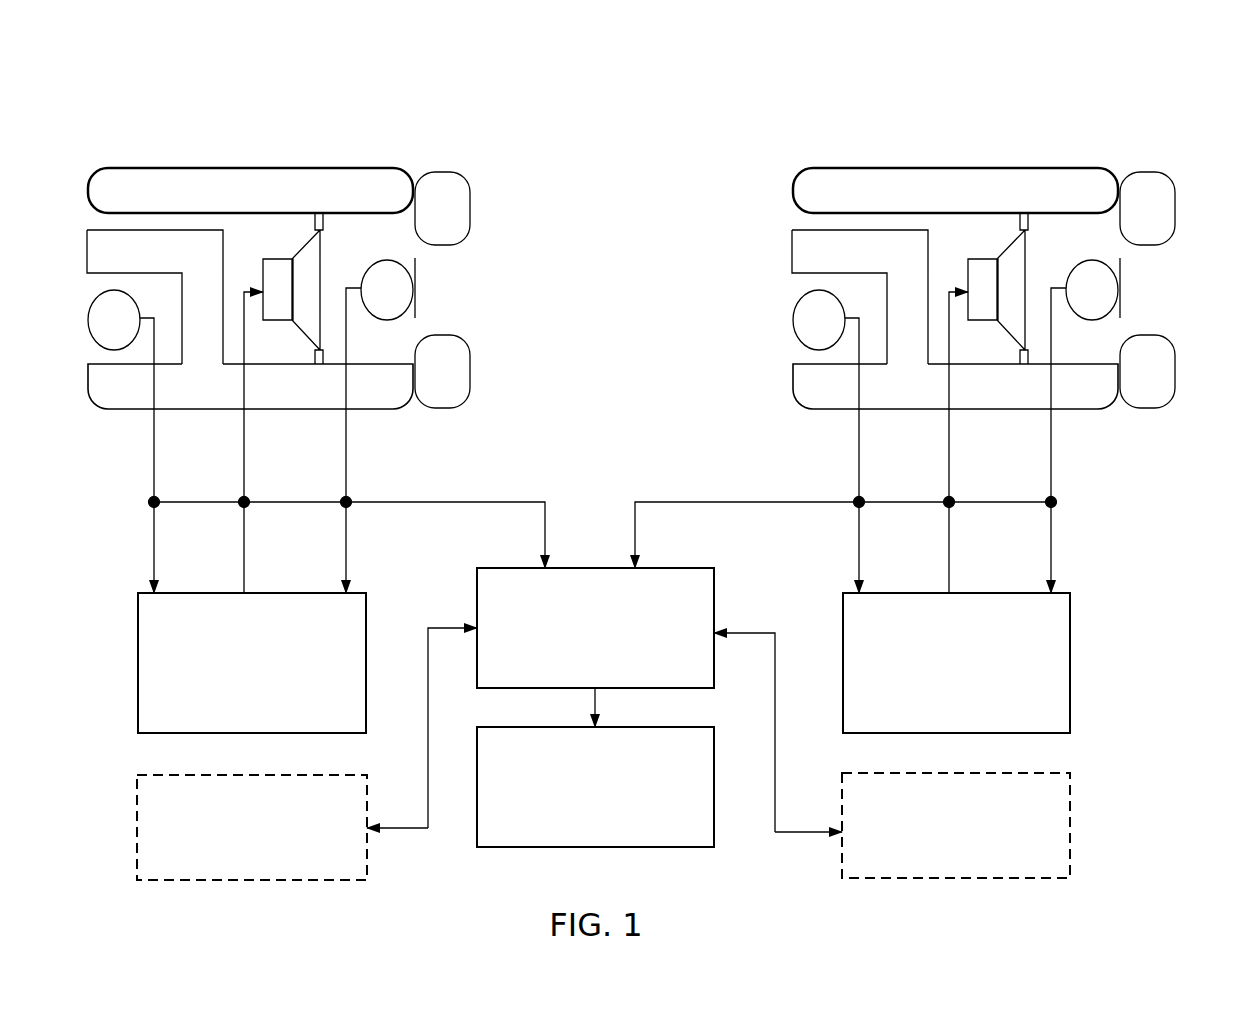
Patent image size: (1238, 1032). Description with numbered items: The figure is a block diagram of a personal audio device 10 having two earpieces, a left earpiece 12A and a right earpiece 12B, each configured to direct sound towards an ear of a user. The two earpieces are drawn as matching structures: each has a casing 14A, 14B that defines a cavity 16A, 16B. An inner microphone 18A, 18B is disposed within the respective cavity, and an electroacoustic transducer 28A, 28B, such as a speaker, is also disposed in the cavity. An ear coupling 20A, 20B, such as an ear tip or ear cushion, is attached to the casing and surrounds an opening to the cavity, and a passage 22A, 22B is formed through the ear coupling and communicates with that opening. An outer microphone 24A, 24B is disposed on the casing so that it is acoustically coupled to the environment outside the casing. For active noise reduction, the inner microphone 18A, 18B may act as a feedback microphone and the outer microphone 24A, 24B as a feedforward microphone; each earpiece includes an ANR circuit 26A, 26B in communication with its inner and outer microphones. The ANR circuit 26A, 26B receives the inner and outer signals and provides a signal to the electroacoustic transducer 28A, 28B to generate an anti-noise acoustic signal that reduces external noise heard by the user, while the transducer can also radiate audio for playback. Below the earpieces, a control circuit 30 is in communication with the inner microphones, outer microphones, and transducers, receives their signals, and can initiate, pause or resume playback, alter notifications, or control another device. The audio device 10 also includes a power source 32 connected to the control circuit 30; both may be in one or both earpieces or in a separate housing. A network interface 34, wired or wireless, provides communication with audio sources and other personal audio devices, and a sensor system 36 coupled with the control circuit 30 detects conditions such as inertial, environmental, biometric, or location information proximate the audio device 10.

The personal audio device 10 is at (652, 113).
The left earpiece 12A is at (136, 118).
The right earpiece 12B is at (839, 118).
The casing 14A is at (250, 288).
The casing 14B is at (955, 288).
The cavity 16A is at (399, 340).
The cavity 16B is at (1164, 329).
The inner microphone 18A is at (387, 290).
The inner microphone 18B is at (1092, 290).
The ear coupling 20A is at (442, 290).
The ear coupling 20B is at (1147, 290).
The passage 22A is at (450, 279).
The passage 22B is at (1187, 257).
The outer microphone 24A is at (114, 320).
The outer microphone 24B is at (819, 320).
The ANR circuit 26A is at (252, 663).
The ANR circuit 26B is at (956, 663).
The electroacoustic transducer 28A is at (293, 288).
The electroacoustic transducer 28B is at (998, 288).
The control circuit 30 is at (595, 628).
The power source 32 is at (595, 787).
The network interface 34 is at (252, 827).
The sensor system 36 is at (956, 825).